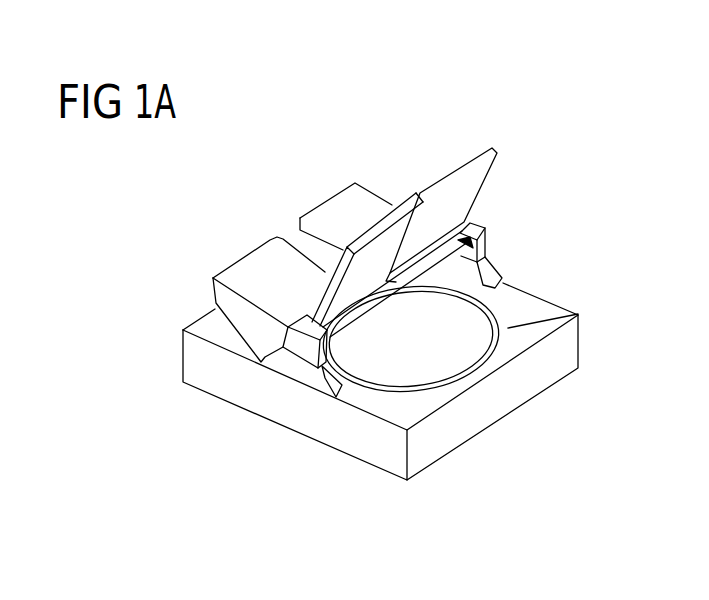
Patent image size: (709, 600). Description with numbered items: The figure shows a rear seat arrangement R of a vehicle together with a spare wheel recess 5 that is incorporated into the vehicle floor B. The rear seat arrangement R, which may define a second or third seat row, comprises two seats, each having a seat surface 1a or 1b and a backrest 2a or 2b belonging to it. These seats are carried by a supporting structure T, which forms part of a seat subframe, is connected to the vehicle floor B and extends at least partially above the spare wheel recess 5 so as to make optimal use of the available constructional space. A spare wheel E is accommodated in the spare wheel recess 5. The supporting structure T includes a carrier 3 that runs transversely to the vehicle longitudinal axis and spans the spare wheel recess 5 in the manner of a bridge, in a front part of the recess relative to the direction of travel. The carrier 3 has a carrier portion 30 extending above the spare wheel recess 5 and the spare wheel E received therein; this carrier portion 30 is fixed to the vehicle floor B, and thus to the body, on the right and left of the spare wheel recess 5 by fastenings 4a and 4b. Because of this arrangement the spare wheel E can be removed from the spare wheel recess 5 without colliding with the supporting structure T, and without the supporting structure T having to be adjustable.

The vehicle floor B is at (405, 412).
The spare wheel E is at (447, 362).
The spare wheel recess 5 is at (578, 314).
The seat surface 1a is at (252, 270).
The seat surface 1b is at (362, 207).
The backrest 2a is at (347, 247).
The backrest 2b is at (478, 168).
The carrier 3 is at (487, 229).
The fastening 4a is at (308, 372).
The fastening 4b is at (499, 266).
The carrier portion 30 is at (377, 309).
The rear seat arrangement R is at (228, 215).
The supporting structure T is at (510, 204).